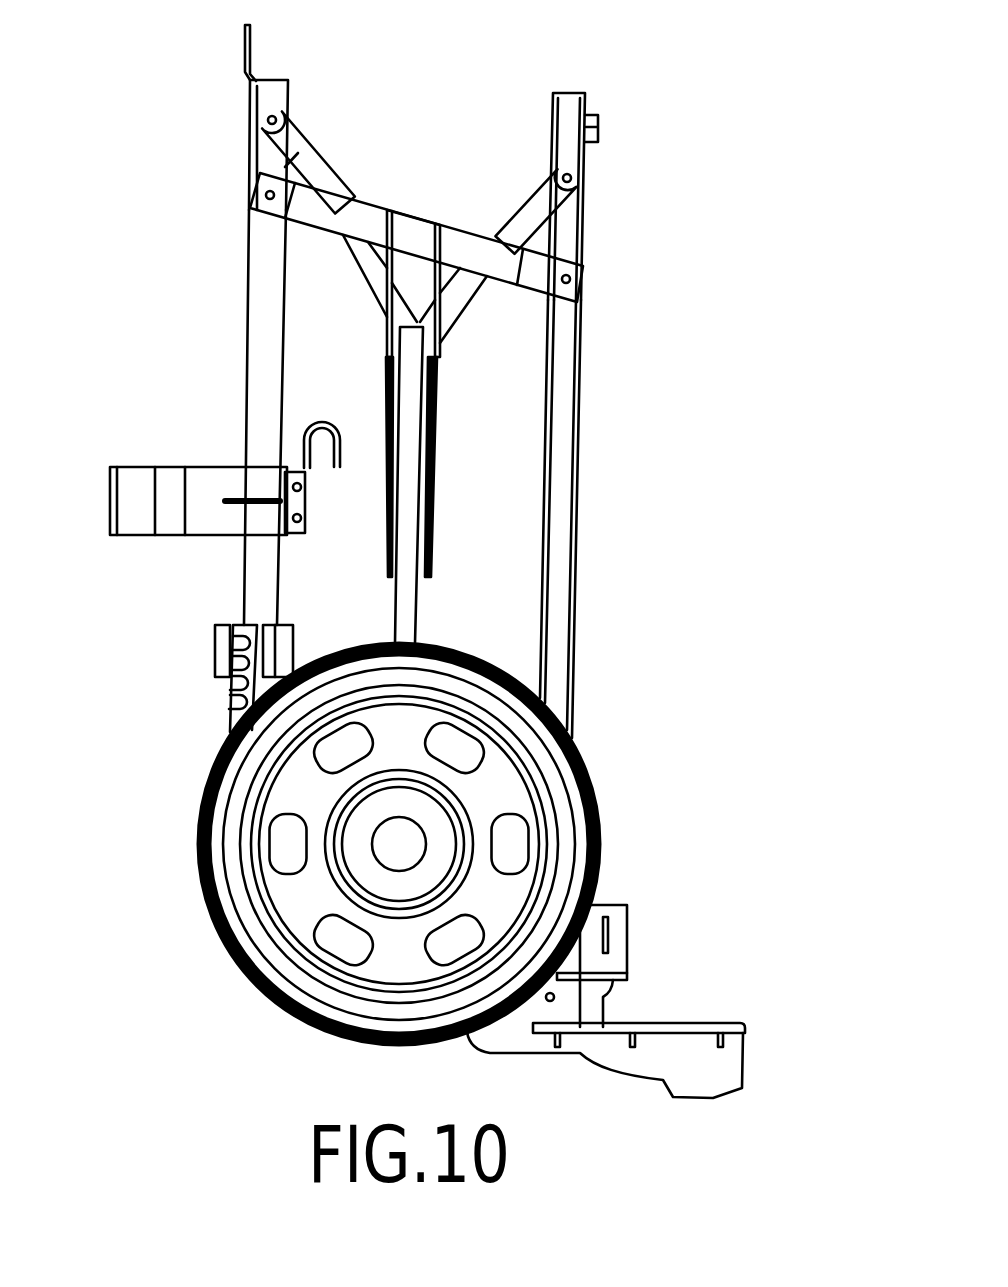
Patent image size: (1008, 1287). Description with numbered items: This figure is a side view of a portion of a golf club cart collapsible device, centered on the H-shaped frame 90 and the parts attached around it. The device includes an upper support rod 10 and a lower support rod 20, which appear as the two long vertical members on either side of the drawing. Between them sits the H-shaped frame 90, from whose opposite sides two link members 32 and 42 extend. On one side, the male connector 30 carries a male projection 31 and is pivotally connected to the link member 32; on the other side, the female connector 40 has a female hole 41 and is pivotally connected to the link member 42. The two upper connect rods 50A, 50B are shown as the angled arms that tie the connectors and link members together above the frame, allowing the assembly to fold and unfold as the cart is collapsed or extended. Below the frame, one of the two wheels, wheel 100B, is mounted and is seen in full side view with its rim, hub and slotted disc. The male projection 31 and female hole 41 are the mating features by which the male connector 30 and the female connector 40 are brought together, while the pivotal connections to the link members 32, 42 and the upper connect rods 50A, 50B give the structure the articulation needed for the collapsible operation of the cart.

The upper support rod 10 is at (260, 323).
The lower support rod 20 is at (570, 390).
The male connector 30 is at (570, 153).
The male projection 31 is at (600, 127).
The link member 32 is at (502, 272).
The female connector 40 is at (253, 128).
The female hole 41 is at (243, 40).
The link member 42 is at (320, 212).
The upper connect rod 50A is at (250, 195).
The upper connect rod 50B is at (525, 218).
The H-shaped frame 90 is at (413, 210).
The wheel 100B is at (557, 786).